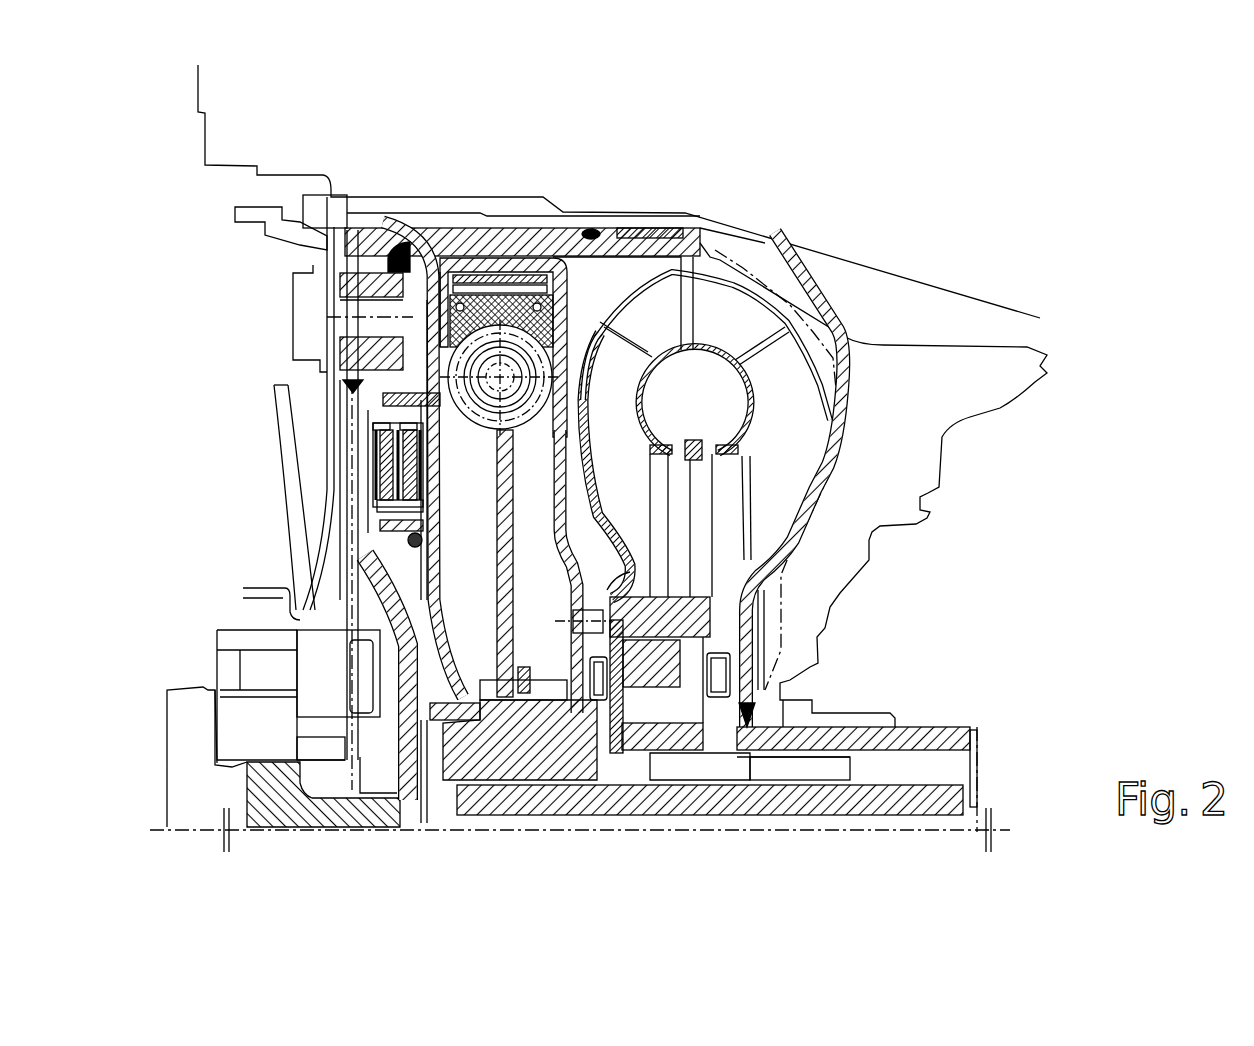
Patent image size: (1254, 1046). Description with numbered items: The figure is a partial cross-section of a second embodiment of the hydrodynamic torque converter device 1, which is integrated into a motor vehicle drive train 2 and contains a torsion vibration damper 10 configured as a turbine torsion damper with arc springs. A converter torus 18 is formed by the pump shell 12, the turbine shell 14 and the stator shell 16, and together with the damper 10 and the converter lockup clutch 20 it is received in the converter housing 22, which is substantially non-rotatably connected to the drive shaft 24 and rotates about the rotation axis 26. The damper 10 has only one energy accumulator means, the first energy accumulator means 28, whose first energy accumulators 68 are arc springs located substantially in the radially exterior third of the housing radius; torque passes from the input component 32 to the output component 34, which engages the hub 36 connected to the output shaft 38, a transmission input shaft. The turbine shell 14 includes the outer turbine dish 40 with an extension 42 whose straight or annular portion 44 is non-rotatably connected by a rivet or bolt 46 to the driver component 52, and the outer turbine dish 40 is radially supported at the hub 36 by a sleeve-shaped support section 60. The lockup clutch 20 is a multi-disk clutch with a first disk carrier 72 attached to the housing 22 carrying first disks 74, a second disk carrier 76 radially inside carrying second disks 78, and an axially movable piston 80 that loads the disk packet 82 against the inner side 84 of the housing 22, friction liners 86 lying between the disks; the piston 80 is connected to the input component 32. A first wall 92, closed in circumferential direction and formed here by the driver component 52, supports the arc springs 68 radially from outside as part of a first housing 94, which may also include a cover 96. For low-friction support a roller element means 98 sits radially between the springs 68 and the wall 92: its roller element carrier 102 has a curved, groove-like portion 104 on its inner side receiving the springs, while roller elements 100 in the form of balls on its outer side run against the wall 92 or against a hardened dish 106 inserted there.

The hydrodynamic torque converter device 1 is at (915, 226).
The motor vehicle drive train 2 is at (990, 744).
The torsion vibration damper 10 is at (588, 272).
The pump shell 12 is at (732, 388).
The turbine shell 14 is at (652, 392).
The stator shell 16 is at (691, 425).
The converter torus 18 is at (803, 562).
The converter lockup clutch 20 is at (385, 538).
The converter housing 22 is at (585, 258).
The drive shaft 24 is at (188, 712).
The rotation axis 26 is at (1005, 830).
The first energy accumulator means 28 is at (478, 440).
The input component 32 is at (327, 340).
The output component 34 is at (507, 565).
The hub 36 is at (527, 755).
The output shaft 38 is at (910, 797).
The outer turbine dish 40 is at (598, 423).
The extension 42 is at (610, 592).
The straight or annular portion 44 is at (593, 640).
The rivet or bolt 46 is at (567, 623).
The driver component 52 is at (558, 507).
The support section 60 is at (597, 712).
The first energy accumulators 68 is at (538, 352).
The first disk carrier 72 is at (327, 357).
The first disks 74 is at (383, 398).
The second disk carrier 76 is at (438, 522).
The second disks 78 is at (420, 500).
The piston 80 is at (437, 538).
The disk packet 82 is at (373, 433).
The inner side 84 is at (380, 570).
The friction liners 86 is at (380, 455).
The first wall 92 is at (501, 321).
The first housing 94 is at (475, 268).
The cover 96 is at (423, 288).
The roller element means 98 is at (552, 248).
The roller elements 100 is at (490, 295).
The roller element carrier 102 is at (398, 262).
The portion 104 is at (524, 422).
The dish 106 is at (525, 288).